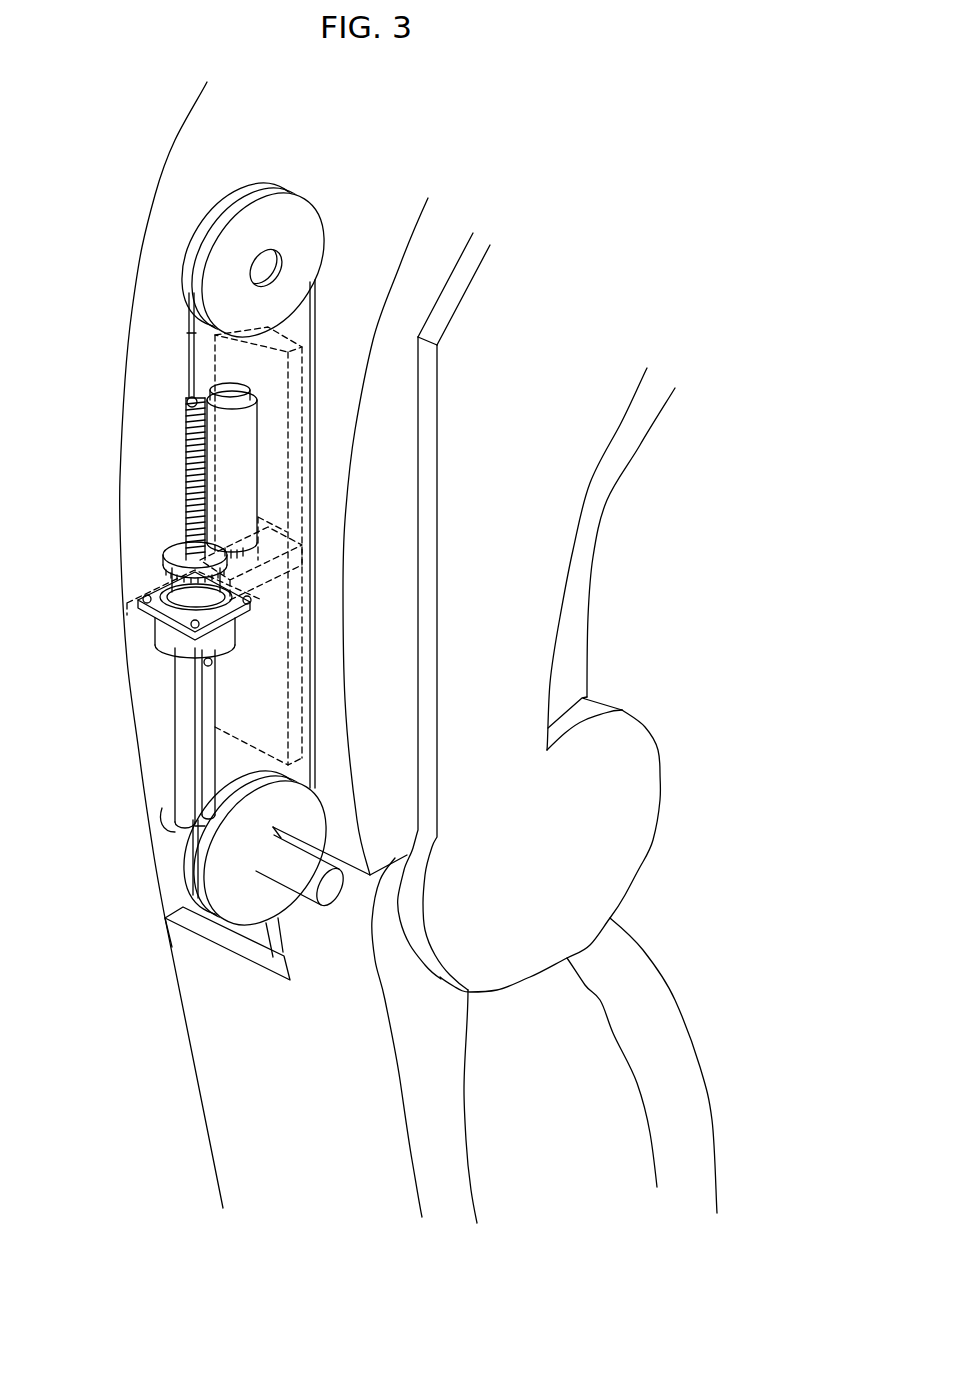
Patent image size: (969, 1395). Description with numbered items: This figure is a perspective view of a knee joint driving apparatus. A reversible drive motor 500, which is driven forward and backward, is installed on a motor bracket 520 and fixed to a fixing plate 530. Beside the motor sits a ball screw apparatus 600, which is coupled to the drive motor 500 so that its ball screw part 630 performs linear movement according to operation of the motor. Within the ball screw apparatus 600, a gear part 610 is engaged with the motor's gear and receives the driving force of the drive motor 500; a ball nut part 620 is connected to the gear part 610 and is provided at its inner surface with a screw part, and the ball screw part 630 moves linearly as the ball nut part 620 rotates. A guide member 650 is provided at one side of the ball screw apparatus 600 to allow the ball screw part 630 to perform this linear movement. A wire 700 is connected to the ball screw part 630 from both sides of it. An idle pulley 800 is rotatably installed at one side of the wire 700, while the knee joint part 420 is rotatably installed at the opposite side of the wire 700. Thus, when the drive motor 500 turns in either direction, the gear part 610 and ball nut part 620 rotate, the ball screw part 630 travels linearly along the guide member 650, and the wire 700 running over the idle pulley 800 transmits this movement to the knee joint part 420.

The knee joint part 420 is at (197, 923).
The drive motor 500 is at (240, 437).
The motor bracket 520 is at (262, 550).
The fixing plate 530 is at (293, 385).
The ball screw apparatus 600 is at (157, 492).
The gear part 610 is at (165, 548).
The ball nut part 620 is at (183, 590).
The ball screw part 630 is at (195, 430).
The guide member 650 is at (185, 690).
The wire 700 is at (313, 297).
The idle pulley 800 is at (310, 222).